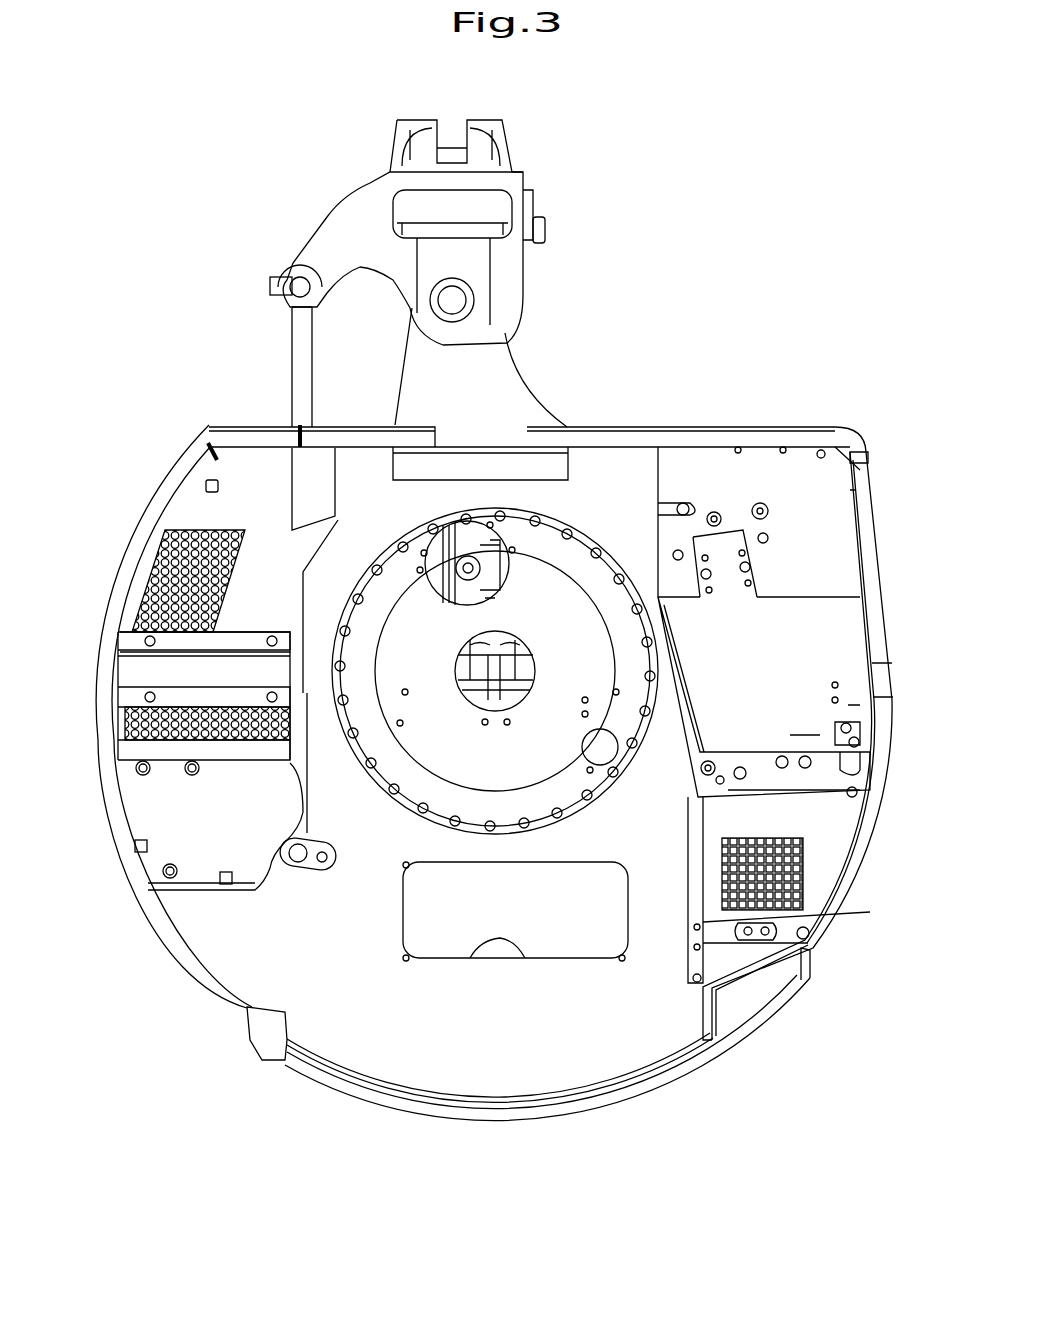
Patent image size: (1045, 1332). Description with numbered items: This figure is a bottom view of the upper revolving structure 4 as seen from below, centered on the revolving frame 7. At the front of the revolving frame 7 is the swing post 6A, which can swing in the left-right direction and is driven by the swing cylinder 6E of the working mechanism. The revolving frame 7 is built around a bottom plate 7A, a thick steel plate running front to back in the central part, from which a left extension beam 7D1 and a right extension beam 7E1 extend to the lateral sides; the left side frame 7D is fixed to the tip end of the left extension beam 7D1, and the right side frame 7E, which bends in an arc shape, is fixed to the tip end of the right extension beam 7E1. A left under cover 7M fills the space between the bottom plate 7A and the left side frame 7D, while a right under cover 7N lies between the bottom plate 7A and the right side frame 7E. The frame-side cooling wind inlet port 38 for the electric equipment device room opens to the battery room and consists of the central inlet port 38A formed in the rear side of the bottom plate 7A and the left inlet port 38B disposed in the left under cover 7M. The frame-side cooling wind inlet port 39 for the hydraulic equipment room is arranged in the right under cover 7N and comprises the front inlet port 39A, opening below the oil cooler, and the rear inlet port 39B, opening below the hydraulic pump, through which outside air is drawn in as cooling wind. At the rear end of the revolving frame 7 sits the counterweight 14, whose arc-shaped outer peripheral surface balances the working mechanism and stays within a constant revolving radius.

The upper revolving structure 4 is at (842, 398).
The swing post 6A is at (350, 223).
The swing cylinder 6E is at (297, 368).
The revolving frame 7 is at (133, 908).
The bottom plate 7A is at (285, 935).
The left side frame 7D is at (870, 557).
The left extension beam 7D1 is at (830, 773).
The right side frame 7E is at (135, 550).
The right extension beam 7E1 is at (135, 675).
The left under cover 7M is at (825, 855).
The right under cover 7N is at (240, 500).
The counterweight 14 is at (748, 1007).
The frame-side cooling wind inlet port for electric equipment device room 38 is at (590, 975).
The central inlet port 38A is at (488, 960).
The left inlet port 38B is at (800, 895).
The frame-side cooling wind inlet port for hydraulic equipment room 39 is at (160, 530).
The front inlet port 39A is at (140, 605).
The rear inlet port 39B is at (130, 720).